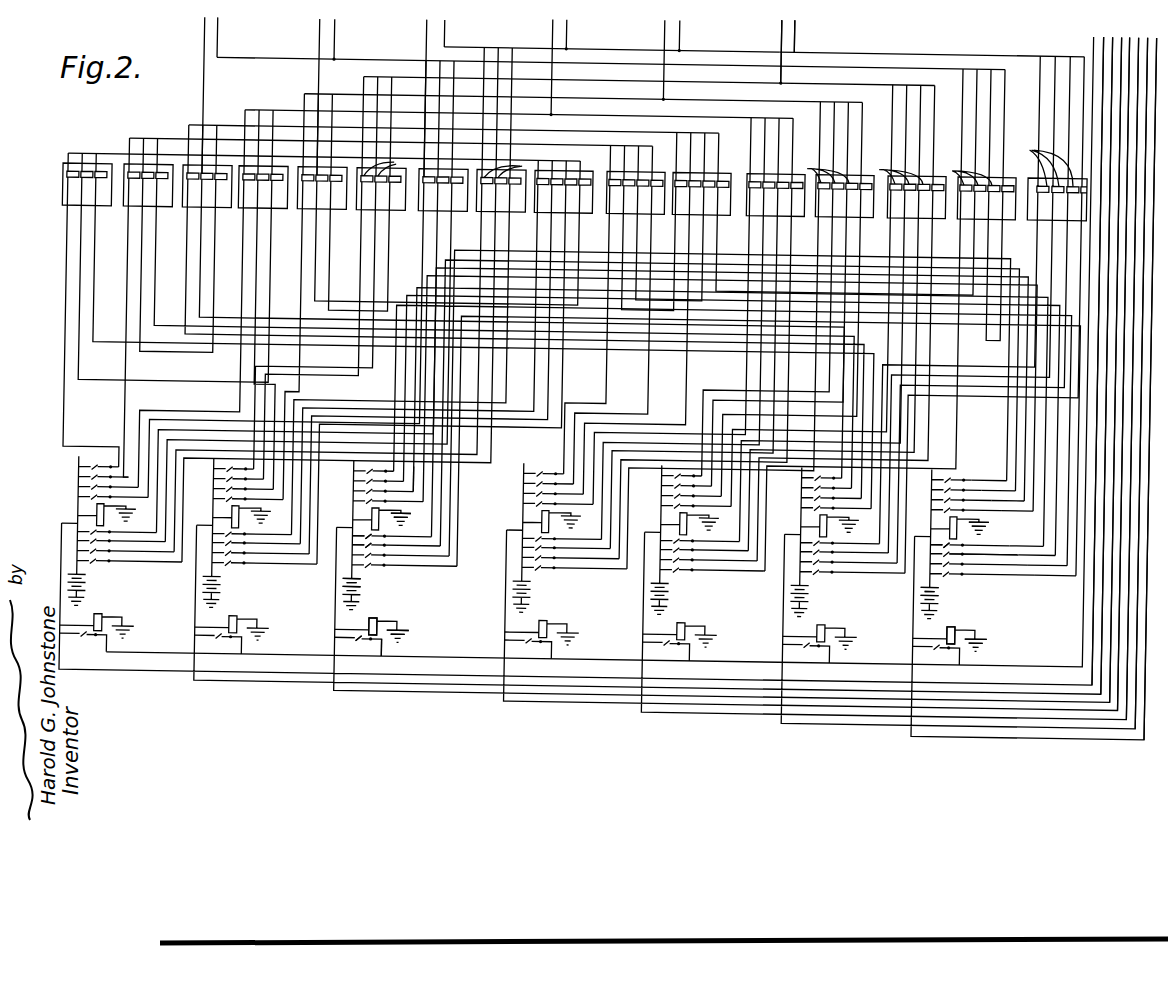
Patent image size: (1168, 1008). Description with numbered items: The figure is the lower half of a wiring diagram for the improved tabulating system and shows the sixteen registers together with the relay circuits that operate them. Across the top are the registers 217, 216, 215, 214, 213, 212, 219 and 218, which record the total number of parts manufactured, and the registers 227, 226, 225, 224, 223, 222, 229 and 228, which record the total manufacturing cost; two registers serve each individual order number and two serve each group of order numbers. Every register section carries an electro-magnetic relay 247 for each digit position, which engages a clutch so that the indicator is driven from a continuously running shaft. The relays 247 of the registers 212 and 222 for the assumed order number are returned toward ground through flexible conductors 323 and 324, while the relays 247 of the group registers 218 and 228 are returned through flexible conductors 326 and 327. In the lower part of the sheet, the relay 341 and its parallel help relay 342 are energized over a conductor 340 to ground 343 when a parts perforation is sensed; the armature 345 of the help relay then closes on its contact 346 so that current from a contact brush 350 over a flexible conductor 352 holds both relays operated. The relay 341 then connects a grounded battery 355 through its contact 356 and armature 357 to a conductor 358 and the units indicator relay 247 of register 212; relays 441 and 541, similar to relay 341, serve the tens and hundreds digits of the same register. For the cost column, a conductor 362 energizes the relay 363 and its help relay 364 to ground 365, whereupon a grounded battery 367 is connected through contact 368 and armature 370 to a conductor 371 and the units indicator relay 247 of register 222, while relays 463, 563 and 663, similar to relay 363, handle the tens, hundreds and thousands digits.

The register 217 is at (94, 205).
The register 216 is at (155, 205).
The register 215 is at (214, 205).
The register 214 is at (270, 205).
The register 213 is at (329, 205).
The register 212 is at (388, 205).
The register 219 is at (450, 205).
The group register 218 is at (508, 205).
The register 227 is at (570, 205).
The register 226 is at (644, 205).
The register 225 is at (712, 205).
The register 224 is at (784, 205).
The register 223 is at (853, 205).
The register 222 is at (925, 205).
The register 229 is at (995, 205).
The group register 228 is at (1060, 161).
The electro-magnetic relay 247 is at (719, 155).
The flexible conductor 324 is at (778, 42).
The flexible conductor 327 is at (802, 42).
The flexible conductor 326 is at (904, 46).
The flexible conductor 323 is at (696, 82).
The contact brush 350 is at (396, 268).
The conductor 371 is at (943, 258).
The conductor 362 is at (1108, 339).
The conductor 340 is at (346, 606).
The conductor 358 is at (430, 484).
The ground 343 is at (420, 518).
The relay 541 is at (106, 512).
The relay 441 is at (241, 514).
The relay 341 is at (381, 514).
The relay 663 is at (551, 514).
The relay 563 is at (689, 514).
The relay 463 is at (829, 514).
The relay 363 is at (959, 514).
The ground 365 is at (1008, 520).
The contact 356 is at (368, 542).
The armature 357 is at (376, 544).
The grounded battery 355 is at (370, 578).
The help relay 342 is at (378, 620).
The relay contact 346 is at (376, 636).
The armature 345 is at (392, 650).
The flexible conductor 352 is at (407, 678).
The contact 368 is at (940, 538).
The grounded battery 367 is at (930, 586).
The relay armature 370 is at (948, 542).
The help relay 364 is at (964, 604).